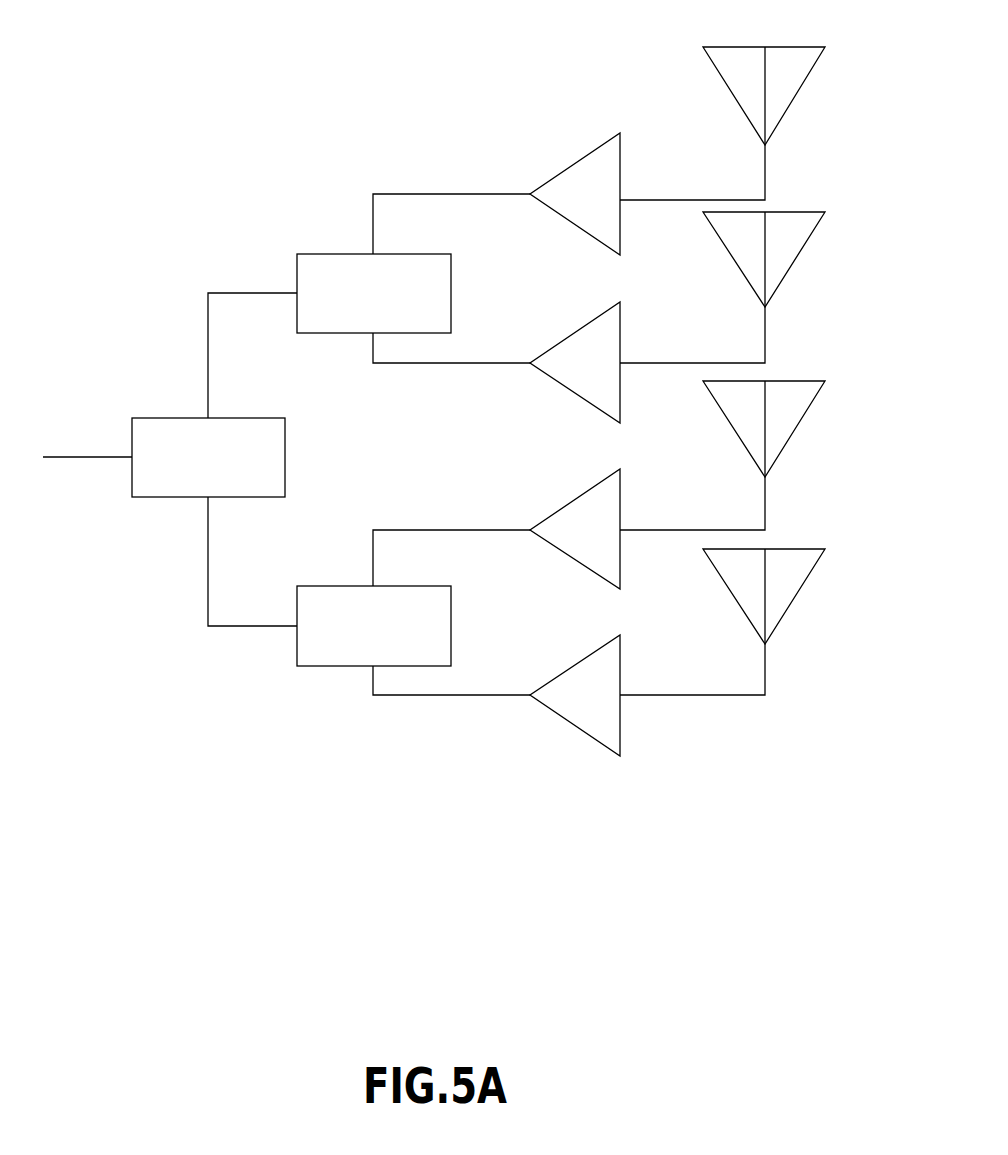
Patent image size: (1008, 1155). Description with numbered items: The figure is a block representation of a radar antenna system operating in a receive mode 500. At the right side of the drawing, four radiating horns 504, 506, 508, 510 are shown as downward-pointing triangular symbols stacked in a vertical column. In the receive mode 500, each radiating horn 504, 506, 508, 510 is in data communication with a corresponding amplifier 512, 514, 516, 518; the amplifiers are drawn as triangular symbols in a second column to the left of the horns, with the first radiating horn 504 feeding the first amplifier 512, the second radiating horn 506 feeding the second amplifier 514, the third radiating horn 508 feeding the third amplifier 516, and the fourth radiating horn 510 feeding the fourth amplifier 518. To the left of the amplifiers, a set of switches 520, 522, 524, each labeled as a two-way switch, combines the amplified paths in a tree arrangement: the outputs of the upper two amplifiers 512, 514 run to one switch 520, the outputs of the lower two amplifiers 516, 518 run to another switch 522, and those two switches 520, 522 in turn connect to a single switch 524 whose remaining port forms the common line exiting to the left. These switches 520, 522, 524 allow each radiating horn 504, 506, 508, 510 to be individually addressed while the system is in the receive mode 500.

The receive mode 500 is at (218, 65).
The radiating horn 504 is at (795, 95).
The radiating horn 506 is at (793, 265).
The antenna 508 is at (793, 433).
The radiating horn 510 is at (793, 601).
The amplifier 512 is at (572, 162).
The amplifier 514 is at (573, 332).
The amplifier 516 is at (573, 500).
The amplifier 518 is at (573, 665).
The switch 520 is at (335, 252).
The switch 522 is at (335, 667).
The switch 524 is at (168, 417).